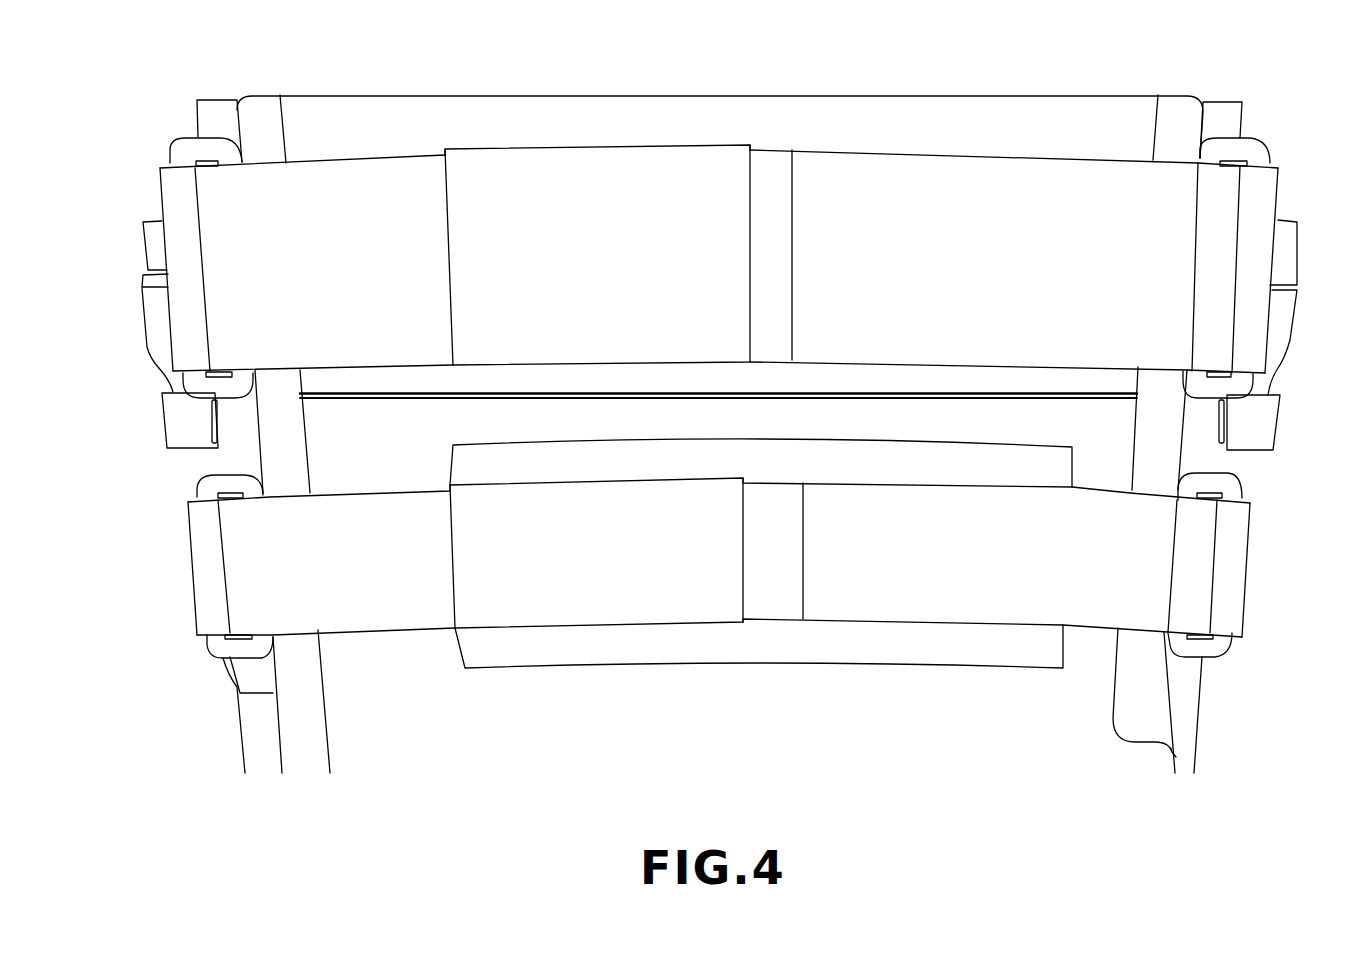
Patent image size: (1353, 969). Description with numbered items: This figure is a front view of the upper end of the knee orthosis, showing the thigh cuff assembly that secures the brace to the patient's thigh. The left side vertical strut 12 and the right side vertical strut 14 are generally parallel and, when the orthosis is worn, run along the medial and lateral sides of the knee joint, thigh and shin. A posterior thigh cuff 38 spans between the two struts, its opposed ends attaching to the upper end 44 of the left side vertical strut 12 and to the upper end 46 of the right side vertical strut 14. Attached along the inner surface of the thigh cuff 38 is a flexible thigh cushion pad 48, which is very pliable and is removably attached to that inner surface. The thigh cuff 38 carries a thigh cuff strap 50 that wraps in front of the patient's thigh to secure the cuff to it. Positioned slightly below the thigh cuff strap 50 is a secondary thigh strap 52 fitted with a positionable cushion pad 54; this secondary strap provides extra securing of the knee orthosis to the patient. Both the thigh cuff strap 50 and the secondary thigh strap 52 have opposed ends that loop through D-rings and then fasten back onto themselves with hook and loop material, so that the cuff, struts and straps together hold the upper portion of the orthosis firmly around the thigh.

The left side vertical strut 12 is at (258, 722).
The right side vertical strut 14 is at (1185, 688).
The posterior thigh cuff 38 is at (1203, 113).
The upper end of left side vertical strut 44 is at (240, 448).
The upper end of right side vertical strut 46 is at (1197, 460).
The flexible thigh cushion pad 48 is at (887, 125).
The thigh cuff strap 50 is at (719, 259).
The secondary thigh strap 52 is at (719, 557).
The positionable cushion pad 54 is at (808, 647).